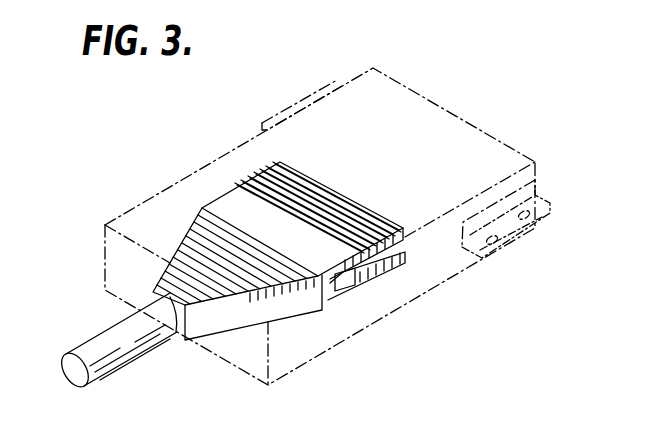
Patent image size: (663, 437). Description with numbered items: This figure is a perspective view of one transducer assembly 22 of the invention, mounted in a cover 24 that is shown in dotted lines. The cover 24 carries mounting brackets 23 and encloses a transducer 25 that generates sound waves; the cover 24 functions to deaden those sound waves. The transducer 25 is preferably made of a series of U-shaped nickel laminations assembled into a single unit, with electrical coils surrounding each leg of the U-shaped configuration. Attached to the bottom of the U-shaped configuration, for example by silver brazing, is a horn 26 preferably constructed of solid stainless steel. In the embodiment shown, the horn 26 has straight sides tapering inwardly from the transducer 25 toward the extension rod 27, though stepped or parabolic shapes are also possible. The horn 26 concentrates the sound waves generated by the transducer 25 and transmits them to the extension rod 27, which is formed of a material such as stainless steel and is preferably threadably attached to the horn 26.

The transducer assembly 22 is at (443, 103).
The mounting brackets 23 is at (546, 211).
The cover 24 is at (362, 120).
The transducer 25 is at (348, 208).
The horn 26 is at (290, 317).
The extension rod 27 is at (132, 353).